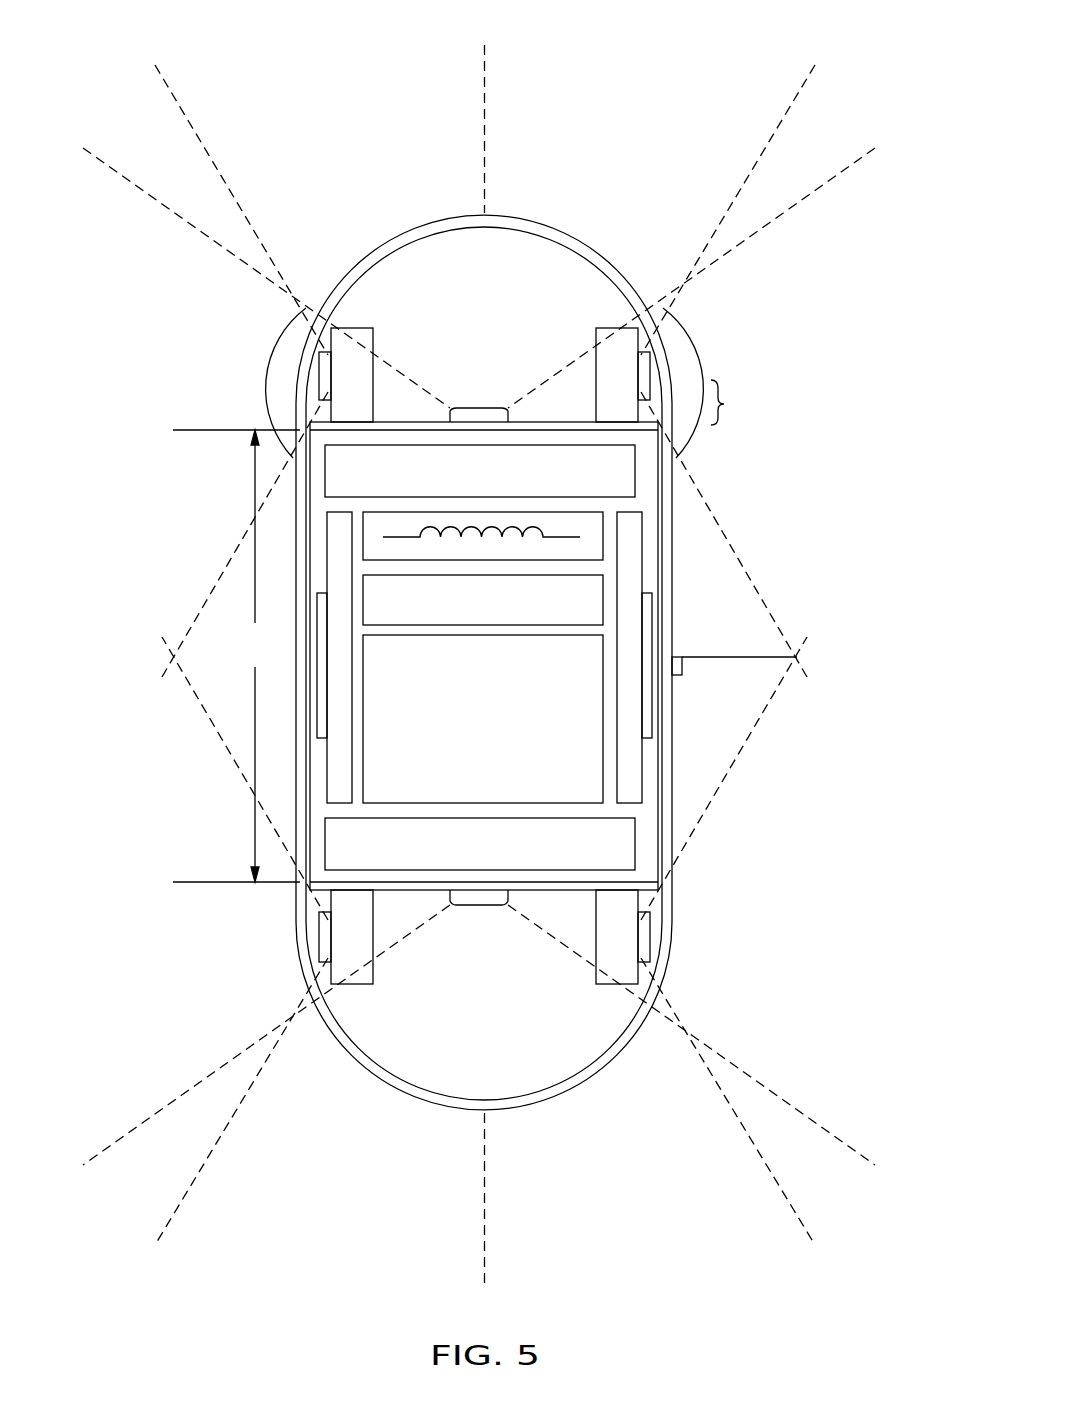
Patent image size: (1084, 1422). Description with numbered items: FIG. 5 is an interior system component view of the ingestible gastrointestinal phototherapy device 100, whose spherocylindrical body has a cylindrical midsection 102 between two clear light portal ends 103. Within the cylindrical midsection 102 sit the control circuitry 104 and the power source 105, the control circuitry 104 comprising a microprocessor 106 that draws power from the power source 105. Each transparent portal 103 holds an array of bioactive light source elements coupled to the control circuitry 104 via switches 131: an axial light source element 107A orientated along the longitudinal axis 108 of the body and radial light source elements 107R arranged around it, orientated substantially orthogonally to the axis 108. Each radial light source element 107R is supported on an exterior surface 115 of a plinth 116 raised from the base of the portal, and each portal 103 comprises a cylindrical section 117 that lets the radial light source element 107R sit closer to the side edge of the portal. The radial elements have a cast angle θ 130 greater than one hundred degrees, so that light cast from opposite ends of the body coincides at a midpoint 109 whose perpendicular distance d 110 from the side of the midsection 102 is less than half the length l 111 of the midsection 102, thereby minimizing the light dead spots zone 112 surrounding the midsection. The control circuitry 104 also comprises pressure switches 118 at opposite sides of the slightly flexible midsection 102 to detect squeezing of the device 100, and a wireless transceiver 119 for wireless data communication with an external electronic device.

The ingestible gastrointestinal phototherapy device 100 is at (858, 66).
The cylindrical midsection 102 is at (675, 567).
The light portal end 103 is at (608, 266).
The control circuitry 104 is at (652, 504).
The power source 105 is at (501, 726).
The microprocessor 106 is at (501, 614).
The axial light source element 107A is at (477, 417).
The radial light source element 107R is at (328, 372).
The longitudinal axis 108 is at (503, 118).
The midpoint 109 is at (805, 655).
The perpendicular distance d 110 is at (710, 663).
The length l 111 is at (245, 642).
The light dead spots zone 112 is at (270, 765).
The exterior surface of plinth 115 is at (330, 338).
The plinth 116 is at (368, 328).
The cylindrical section 117 is at (734, 402).
The pressure switch 118 is at (320, 627).
The wireless transceiver 119 is at (592, 528).
The cast angle θ 130 is at (262, 380).
The switch 131 is at (501, 484).